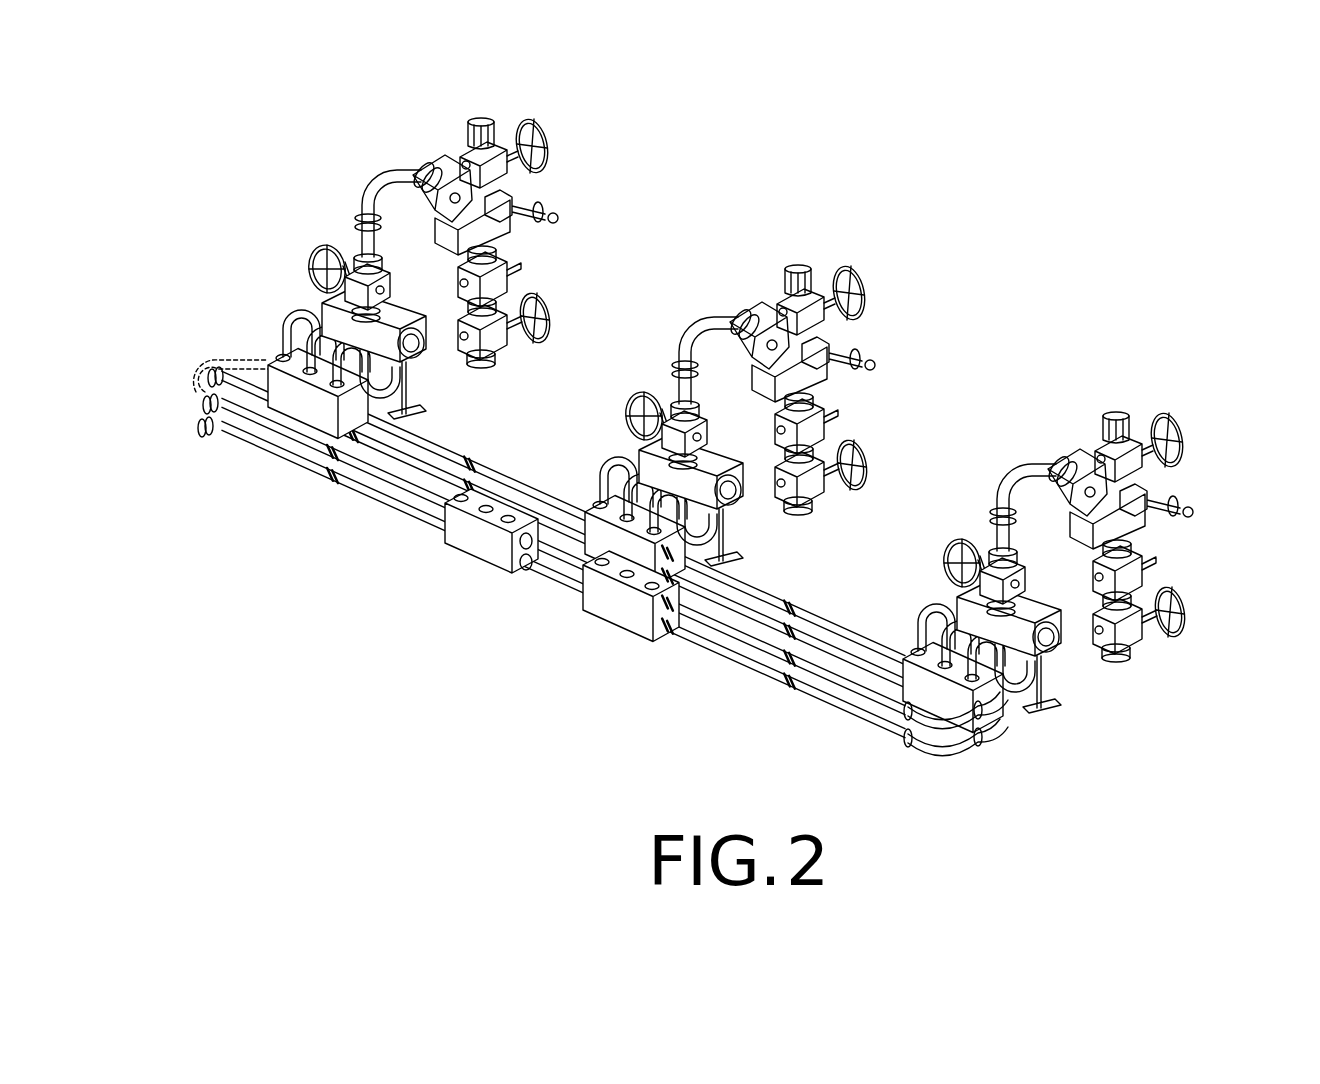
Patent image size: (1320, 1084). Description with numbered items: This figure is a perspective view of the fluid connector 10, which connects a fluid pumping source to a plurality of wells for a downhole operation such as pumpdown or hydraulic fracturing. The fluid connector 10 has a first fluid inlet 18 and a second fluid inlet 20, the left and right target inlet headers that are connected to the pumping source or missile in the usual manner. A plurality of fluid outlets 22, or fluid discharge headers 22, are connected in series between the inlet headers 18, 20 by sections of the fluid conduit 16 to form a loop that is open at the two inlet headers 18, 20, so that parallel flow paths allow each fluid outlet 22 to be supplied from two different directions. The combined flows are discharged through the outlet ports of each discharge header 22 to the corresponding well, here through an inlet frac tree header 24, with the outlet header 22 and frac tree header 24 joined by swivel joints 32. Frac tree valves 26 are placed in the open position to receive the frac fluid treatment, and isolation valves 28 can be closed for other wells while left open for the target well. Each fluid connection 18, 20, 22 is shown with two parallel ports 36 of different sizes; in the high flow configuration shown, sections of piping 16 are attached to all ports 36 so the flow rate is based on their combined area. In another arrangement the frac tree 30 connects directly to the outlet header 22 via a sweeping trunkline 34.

The fluid connector 10 is at (278, 448).
The fluid conduit 16 is at (243, 358).
The first fluid inlet 18 is at (475, 537).
The second fluid inlet 20 is at (610, 600).
The fluid outlet 22 is at (923, 695).
The inlet frac tree header 24 is at (977, 604).
The frac tree valve 26 is at (1132, 631).
The isolation valve 28 is at (1005, 591).
The frac tree 30 is at (1112, 517).
The swivel joint 32 is at (927, 613).
The sweeping trunkline 34 is at (1033, 462).
The parallel port 36 is at (667, 632).